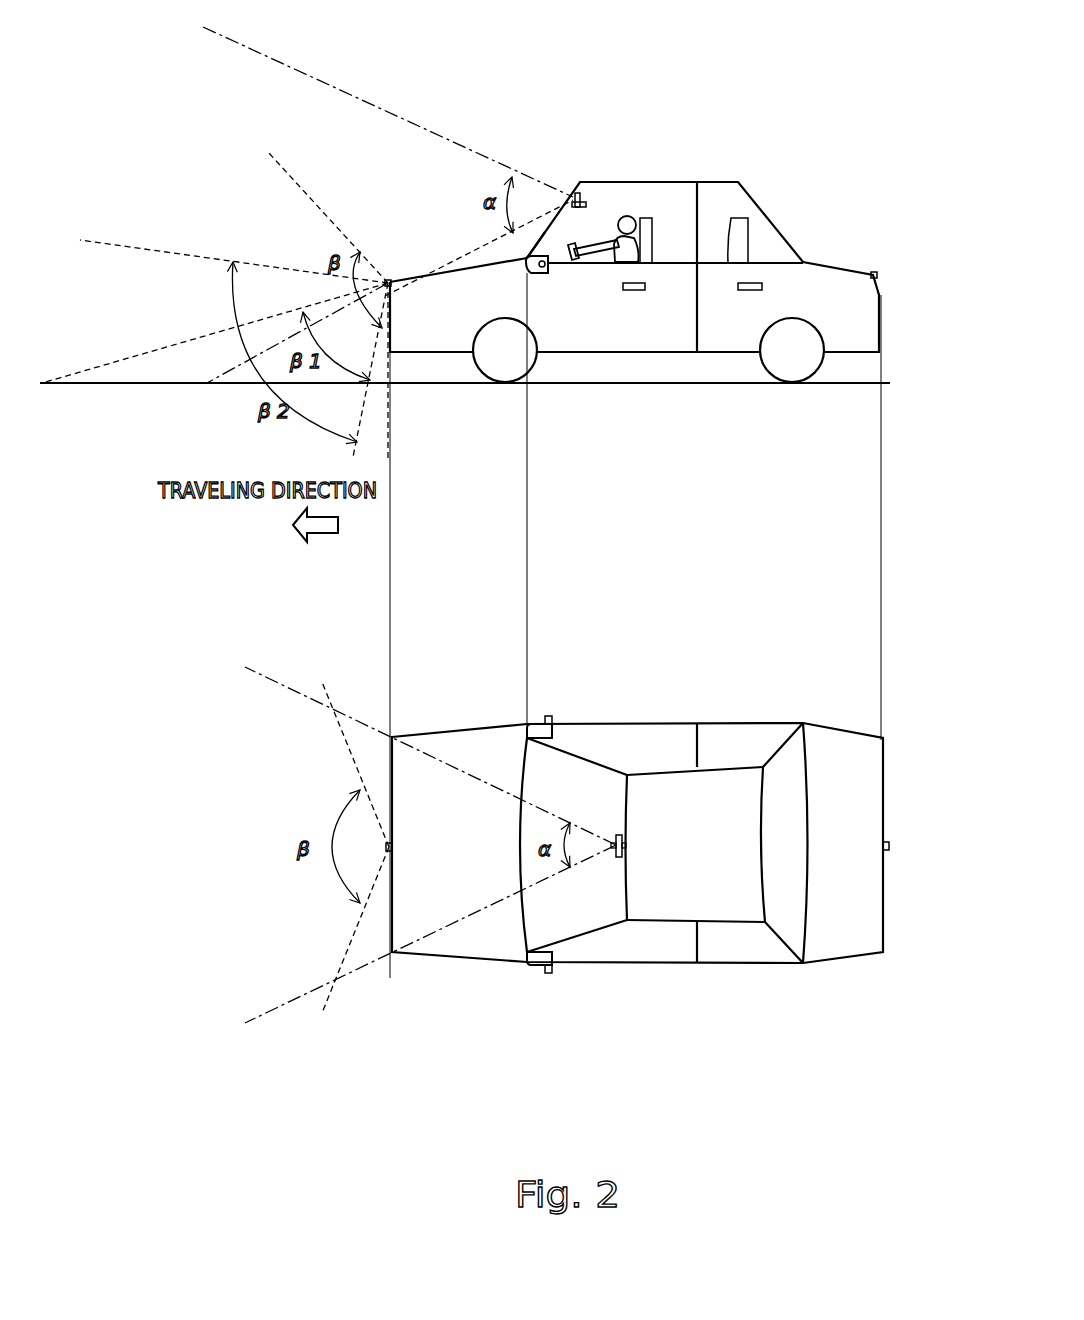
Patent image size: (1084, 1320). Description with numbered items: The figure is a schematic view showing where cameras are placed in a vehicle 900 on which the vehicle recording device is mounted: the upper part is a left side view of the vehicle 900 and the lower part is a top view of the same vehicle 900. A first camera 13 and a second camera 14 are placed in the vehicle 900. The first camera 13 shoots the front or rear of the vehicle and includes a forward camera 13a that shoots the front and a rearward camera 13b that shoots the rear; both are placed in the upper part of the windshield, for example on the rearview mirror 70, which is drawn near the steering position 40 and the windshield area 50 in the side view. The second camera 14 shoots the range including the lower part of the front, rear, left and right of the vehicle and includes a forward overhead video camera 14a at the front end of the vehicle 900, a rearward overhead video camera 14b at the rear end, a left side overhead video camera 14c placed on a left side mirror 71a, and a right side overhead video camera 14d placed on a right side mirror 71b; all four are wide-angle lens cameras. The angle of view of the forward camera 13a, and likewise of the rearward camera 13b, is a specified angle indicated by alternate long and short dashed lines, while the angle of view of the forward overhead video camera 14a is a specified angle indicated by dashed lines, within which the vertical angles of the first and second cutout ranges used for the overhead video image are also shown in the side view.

The first camera 13 is at (613, 461).
The forward camera 13a is at (575, 192).
The rearward camera 13b is at (584, 192).
The second camera 14 is at (679, 614).
The forward overhead video camera 14a is at (388, 280).
The rearward overhead video camera 14b is at (874, 272).
The left side overhead video camera 14c is at (540, 1017).
The right side overhead video camera 14d is at (548, 716).
The steering wheel 40 is at (569, 245).
The windshield 50 is at (535, 247).
The rearview mirror 70 is at (577, 209).
The left side mirror 71a is at (533, 274).
The right side mirror 71b is at (527, 725).
The vehicle 900 is at (738, 181).